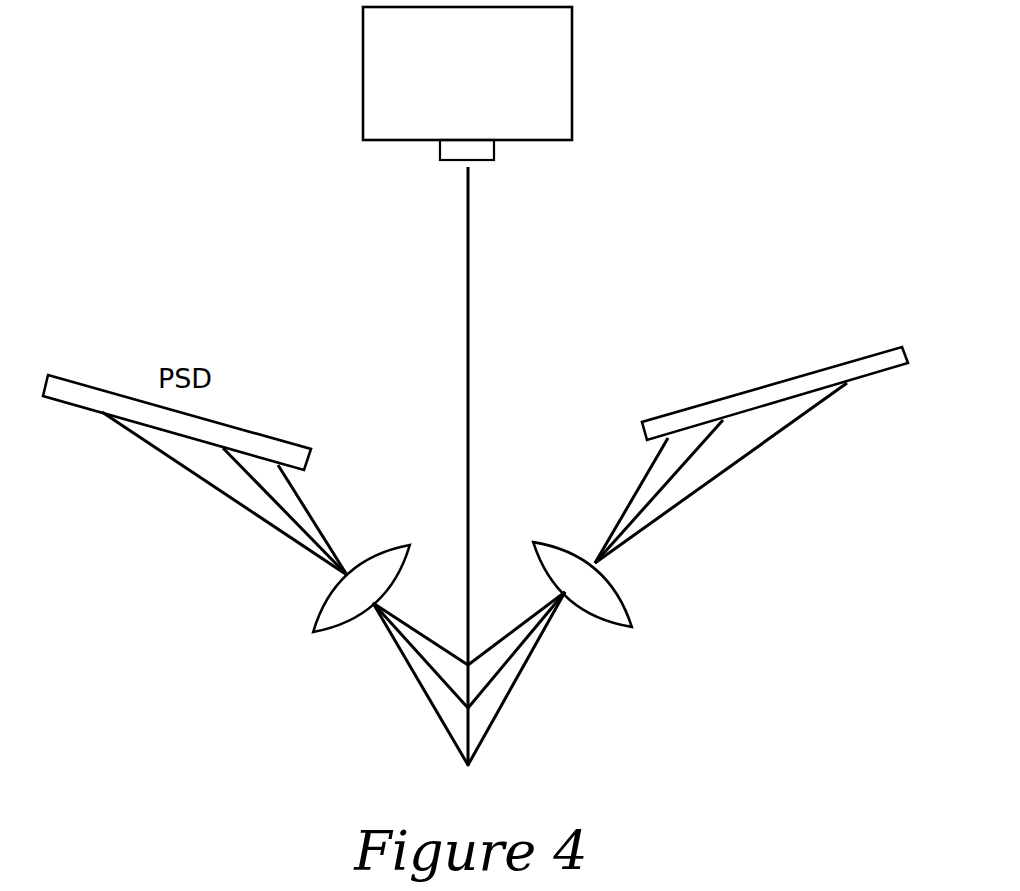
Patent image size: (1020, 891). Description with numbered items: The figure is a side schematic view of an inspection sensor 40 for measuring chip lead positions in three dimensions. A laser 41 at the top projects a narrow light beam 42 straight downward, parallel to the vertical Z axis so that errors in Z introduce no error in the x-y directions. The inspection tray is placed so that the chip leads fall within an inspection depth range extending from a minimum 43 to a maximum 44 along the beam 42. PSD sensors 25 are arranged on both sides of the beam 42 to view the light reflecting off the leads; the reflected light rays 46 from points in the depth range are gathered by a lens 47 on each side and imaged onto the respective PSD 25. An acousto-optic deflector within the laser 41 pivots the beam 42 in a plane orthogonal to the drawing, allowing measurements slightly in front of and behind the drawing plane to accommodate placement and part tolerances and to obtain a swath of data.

The inspection sensor 40 is at (739, 195).
The laser 41 is at (572, 50).
The light beam 42 is at (468, 283).
The minimum of the inspection depth range 43 is at (468, 646).
The maximum of the inspection depth range 44 is at (476, 766).
The reflected light rays 46 is at (768, 445).
The lens 47 is at (628, 598).
The PSD sensor 25 is at (885, 347).